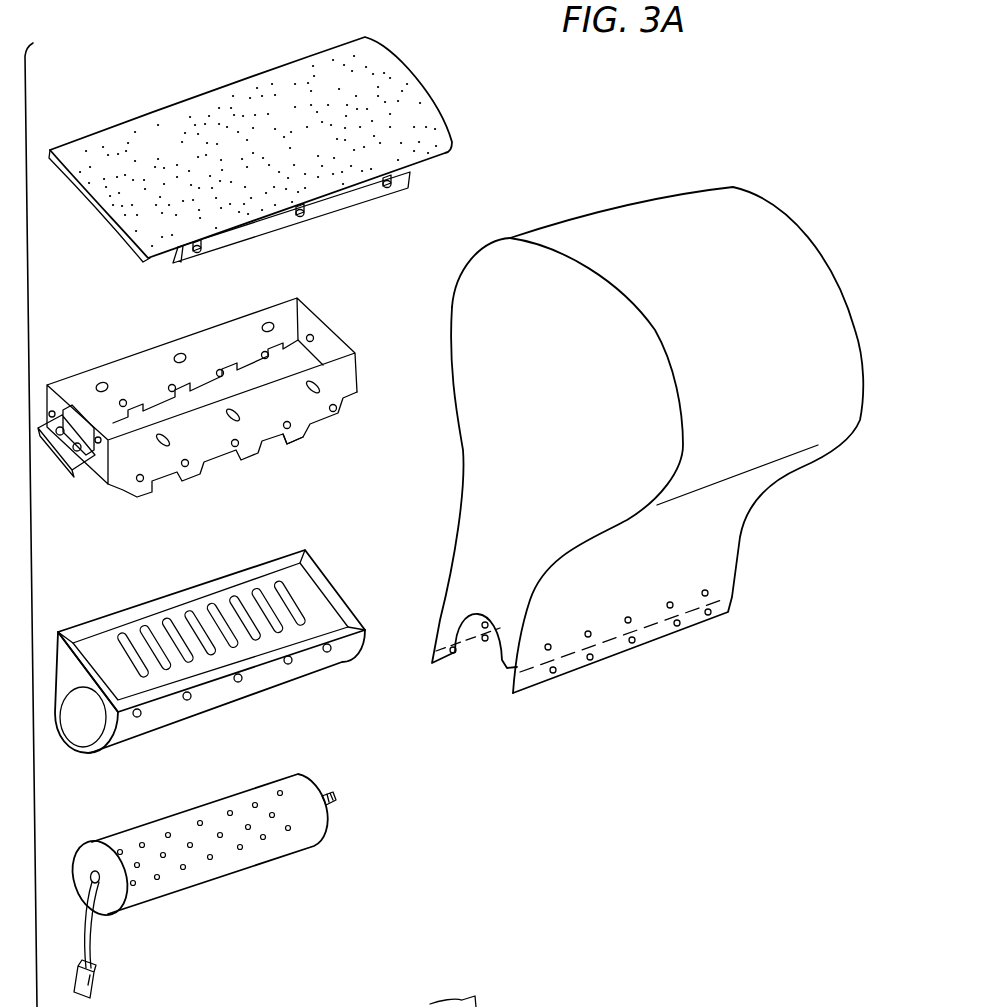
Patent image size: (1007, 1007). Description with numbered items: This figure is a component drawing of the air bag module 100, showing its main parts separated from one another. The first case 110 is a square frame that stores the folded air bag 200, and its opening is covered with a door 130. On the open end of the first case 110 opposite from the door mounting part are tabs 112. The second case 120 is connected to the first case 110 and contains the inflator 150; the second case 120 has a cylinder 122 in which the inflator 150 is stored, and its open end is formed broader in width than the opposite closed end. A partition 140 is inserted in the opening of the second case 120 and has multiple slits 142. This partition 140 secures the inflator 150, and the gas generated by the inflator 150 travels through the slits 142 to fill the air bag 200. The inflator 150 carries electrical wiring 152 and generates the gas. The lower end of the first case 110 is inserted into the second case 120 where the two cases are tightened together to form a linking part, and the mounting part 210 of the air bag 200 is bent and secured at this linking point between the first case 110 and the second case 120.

The air bag module 100 is at (634, 886).
The first case 110 is at (343, 376).
The tabs 112 is at (293, 441).
The second case 120 is at (210, 677).
The cylinder 122 is at (88, 725).
The door 130 is at (418, 116).
The partition 140 is at (188, 617).
The slits 142 is at (168, 625).
The inflator 150 is at (305, 792).
The electrical wiring 152 is at (100, 978).
The air bag 200 is at (647, 440).
The mounting part 210 is at (613, 650).